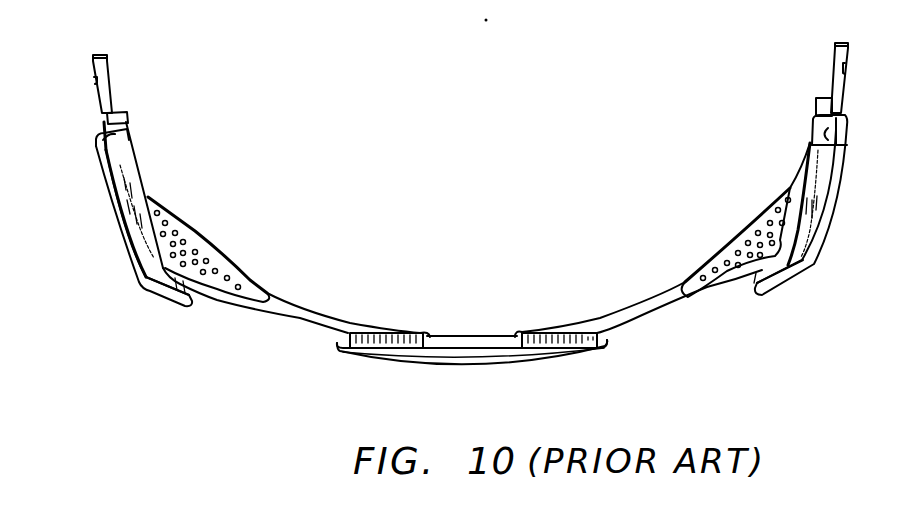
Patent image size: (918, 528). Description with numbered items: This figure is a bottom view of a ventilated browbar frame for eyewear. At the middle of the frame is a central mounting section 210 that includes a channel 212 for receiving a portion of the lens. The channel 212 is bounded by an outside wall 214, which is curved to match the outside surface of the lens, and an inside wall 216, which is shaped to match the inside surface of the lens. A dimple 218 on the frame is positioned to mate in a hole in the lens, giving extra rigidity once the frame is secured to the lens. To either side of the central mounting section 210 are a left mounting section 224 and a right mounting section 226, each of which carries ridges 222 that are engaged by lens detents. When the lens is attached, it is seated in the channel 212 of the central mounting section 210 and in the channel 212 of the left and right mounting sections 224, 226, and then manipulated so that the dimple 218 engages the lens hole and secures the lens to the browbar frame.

The central mounting section 210 is at (431, 357).
The channel 212 is at (563, 338).
The outside wall 214 is at (550, 349).
The inside wall 216 is at (387, 333).
The dimple 218 is at (470, 348).
The ridges 222 is at (134, 161).
The left mounting section 224 is at (113, 226).
The right mounting section 226 is at (818, 259).